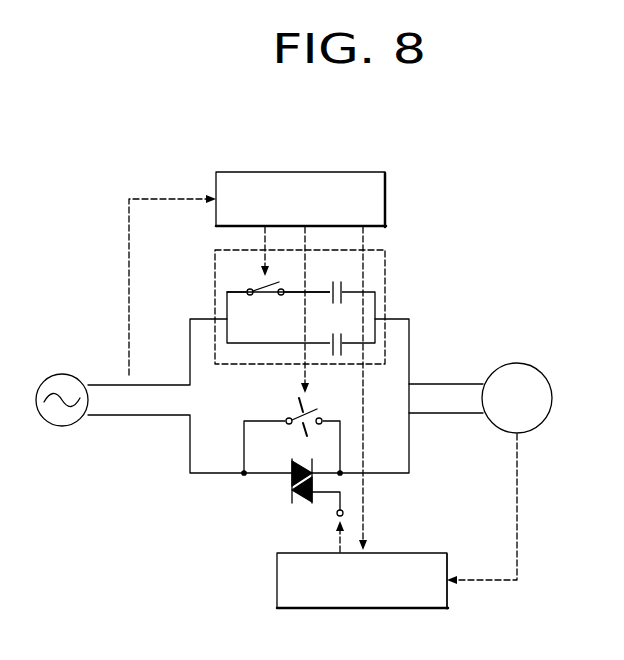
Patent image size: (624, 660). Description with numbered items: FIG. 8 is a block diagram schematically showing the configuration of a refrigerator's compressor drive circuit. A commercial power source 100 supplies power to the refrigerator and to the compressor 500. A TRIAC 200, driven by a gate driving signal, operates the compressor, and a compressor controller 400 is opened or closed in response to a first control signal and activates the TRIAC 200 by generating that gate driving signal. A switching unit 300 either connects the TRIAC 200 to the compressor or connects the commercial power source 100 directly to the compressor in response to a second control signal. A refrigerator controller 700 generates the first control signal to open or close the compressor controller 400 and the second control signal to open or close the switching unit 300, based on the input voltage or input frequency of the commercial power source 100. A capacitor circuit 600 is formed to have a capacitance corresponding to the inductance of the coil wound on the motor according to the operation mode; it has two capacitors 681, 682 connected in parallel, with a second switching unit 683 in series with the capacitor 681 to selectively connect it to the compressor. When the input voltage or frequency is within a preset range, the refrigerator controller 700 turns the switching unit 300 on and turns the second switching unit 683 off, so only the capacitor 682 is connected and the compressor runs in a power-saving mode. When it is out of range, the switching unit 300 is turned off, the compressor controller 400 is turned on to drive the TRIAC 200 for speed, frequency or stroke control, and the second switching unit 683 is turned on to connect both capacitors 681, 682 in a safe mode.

The commercial power source 100 is at (61, 373).
The TRIAC 200 is at (290, 493).
The switching unit 300 is at (297, 413).
The compressor controller 400 is at (277, 573).
The compressor 500 is at (514, 364).
The capacitor circuit 600 is at (331, 307).
The capacitor 681 is at (334, 280).
The capacitor 682 is at (334, 332).
The second switching unit 683 is at (279, 276).
The refrigerator controller 700 is at (386, 198).